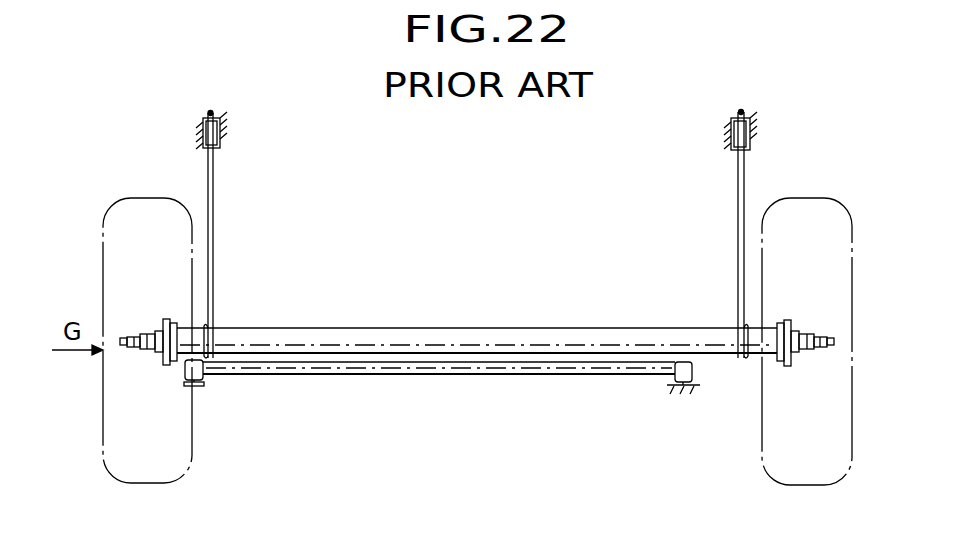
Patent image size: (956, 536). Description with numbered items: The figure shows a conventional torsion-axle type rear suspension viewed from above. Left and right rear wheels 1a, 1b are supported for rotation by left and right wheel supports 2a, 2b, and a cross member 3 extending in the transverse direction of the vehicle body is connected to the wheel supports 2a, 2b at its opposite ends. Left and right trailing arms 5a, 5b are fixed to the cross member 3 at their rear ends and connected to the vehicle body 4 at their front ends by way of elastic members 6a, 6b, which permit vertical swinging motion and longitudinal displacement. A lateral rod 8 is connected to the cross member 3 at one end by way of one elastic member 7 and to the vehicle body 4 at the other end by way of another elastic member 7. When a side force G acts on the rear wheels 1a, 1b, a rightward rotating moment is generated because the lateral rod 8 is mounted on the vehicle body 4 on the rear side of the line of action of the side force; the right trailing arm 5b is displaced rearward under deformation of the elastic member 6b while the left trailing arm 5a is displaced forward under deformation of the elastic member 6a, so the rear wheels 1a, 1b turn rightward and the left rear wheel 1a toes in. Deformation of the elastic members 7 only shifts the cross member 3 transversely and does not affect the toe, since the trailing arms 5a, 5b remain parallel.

The left rear wheel 1a is at (162, 198).
The right rear wheel 1b is at (821, 198).
The left wheel support 2a is at (150, 334).
The right wheel support 2b is at (810, 334).
The cross member 3 is at (576, 328).
The vehicle body 4 is at (225, 121).
The left trailing arm 5a is at (213, 197).
The right trailing arm 5b is at (738, 191).
The elastic member 6a is at (222, 144).
The elastic member 6b is at (752, 145).
The elastic member 7 is at (200, 379).
The lateral rod 8 is at (581, 375).